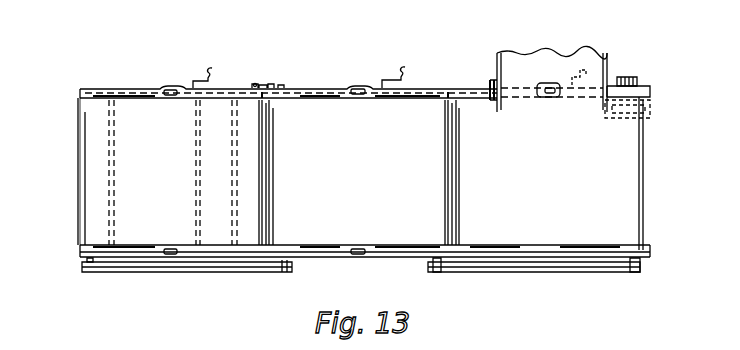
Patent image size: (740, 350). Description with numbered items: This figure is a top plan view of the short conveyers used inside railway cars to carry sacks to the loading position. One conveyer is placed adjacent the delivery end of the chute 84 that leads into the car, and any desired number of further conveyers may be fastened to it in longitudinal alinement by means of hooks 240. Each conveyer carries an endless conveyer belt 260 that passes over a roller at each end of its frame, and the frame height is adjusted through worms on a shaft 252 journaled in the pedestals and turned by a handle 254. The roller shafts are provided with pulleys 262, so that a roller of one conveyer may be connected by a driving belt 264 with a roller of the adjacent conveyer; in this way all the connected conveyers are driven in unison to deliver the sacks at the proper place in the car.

The chute 84 is at (567, 43).
The hooks 240 is at (264, 84).
The shaft 252 is at (197, 150).
The handle 254 is at (213, 68).
The endless conveyer belt 260 is at (93, 196).
The pulleys 262 is at (440, 273).
The driving belt 264 is at (163, 268).